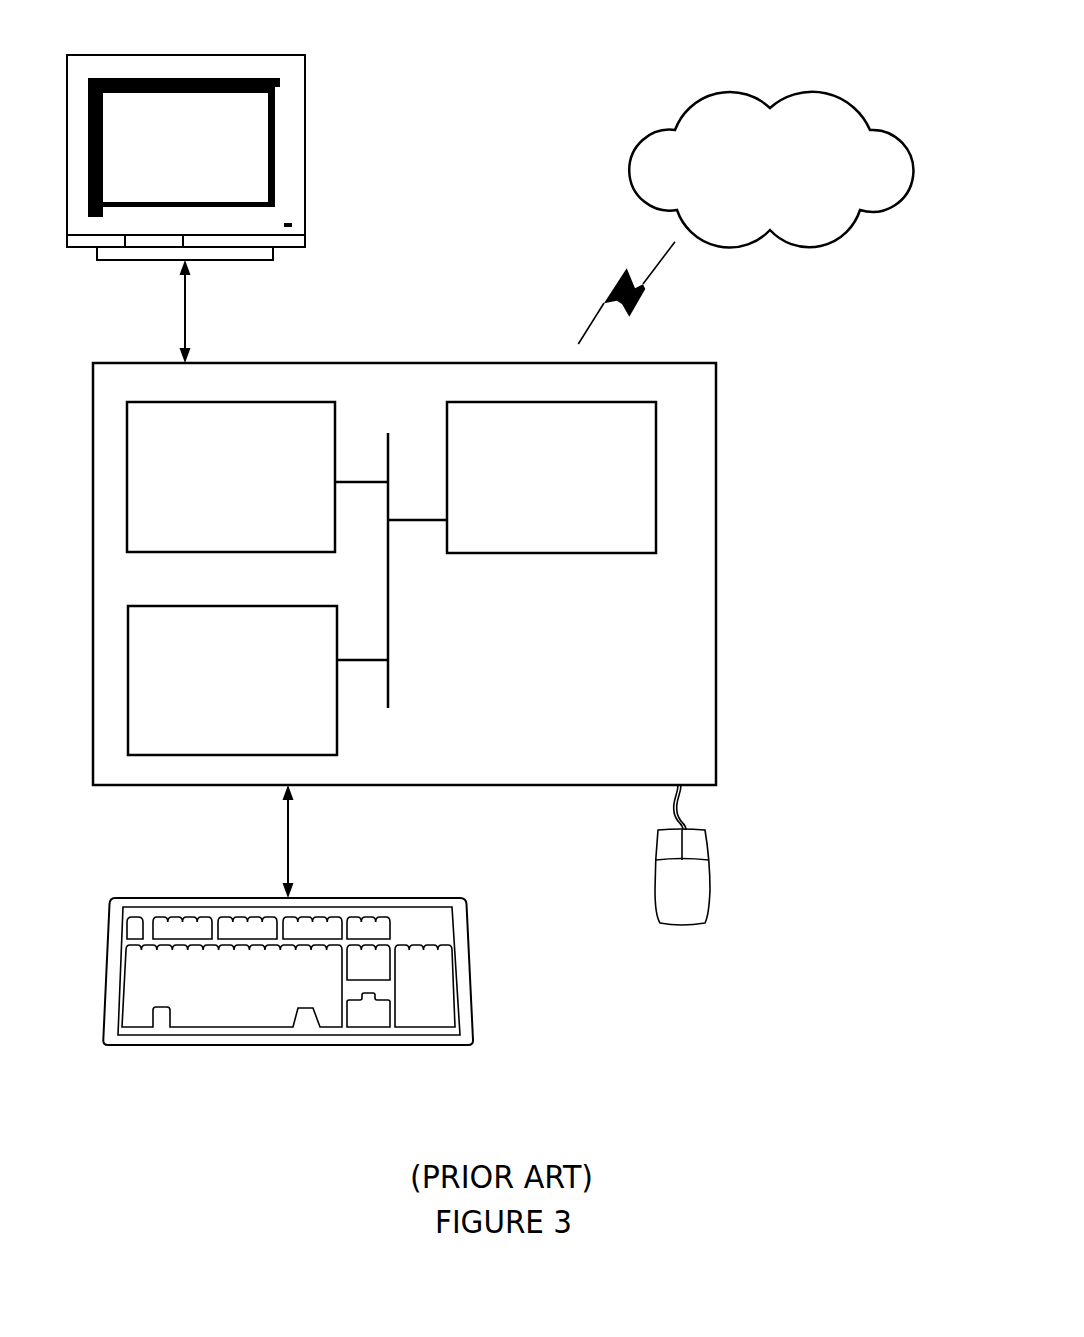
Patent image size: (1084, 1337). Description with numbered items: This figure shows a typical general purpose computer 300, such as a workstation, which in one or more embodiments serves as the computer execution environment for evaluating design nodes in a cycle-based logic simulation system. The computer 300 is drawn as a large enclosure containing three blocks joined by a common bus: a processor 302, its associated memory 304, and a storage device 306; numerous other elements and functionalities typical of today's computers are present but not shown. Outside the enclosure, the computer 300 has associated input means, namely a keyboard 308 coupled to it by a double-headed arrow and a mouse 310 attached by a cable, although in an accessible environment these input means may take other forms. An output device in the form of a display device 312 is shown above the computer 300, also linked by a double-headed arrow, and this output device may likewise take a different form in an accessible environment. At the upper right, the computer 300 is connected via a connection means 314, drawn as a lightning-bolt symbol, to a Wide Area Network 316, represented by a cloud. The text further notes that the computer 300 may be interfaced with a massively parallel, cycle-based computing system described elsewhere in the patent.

The general purpose computer 300 is at (472, 574).
The processor 302 is at (257, 489).
The memory 304 is at (591, 491).
The storage device 306 is at (254, 693).
The keyboard 308 is at (239, 996).
The mouse 310 is at (706, 899).
The display device 312 is at (213, 171).
The connection means 314 is at (589, 261).
The Wide Area Network 316 is at (845, 63).